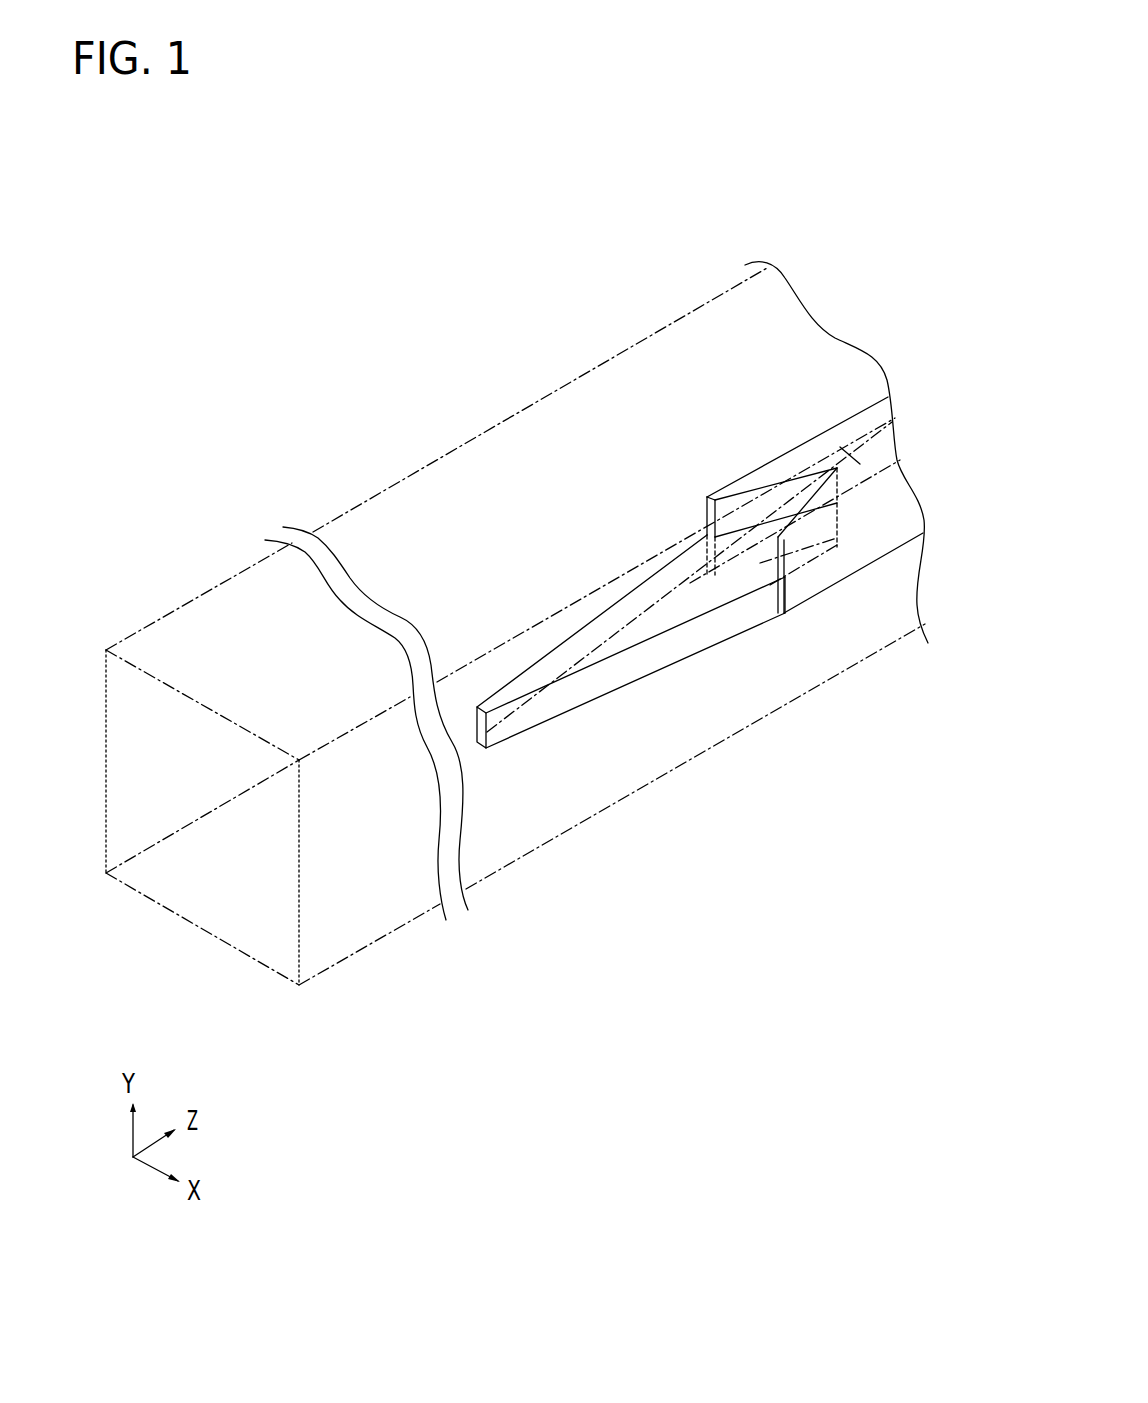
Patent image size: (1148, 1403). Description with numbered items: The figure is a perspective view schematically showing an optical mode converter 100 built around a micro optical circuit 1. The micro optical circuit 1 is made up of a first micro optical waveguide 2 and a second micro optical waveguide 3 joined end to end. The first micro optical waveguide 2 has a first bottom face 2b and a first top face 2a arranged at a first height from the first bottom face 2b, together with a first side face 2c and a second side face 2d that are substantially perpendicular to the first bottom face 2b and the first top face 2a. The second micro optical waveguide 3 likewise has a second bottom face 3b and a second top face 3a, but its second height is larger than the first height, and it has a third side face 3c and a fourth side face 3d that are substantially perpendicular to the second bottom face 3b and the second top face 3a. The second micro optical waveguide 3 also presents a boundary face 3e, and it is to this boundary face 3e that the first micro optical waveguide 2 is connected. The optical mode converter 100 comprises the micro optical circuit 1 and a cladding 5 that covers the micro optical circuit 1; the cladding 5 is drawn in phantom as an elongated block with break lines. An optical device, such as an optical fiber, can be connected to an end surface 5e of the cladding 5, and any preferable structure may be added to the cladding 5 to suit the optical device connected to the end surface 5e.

The optical mode converter 100 is at (712, 277).
The micro optical circuit 1 is at (795, 794).
The first micro optical waveguide 2 is at (640, 682).
The first top face 2a is at (668, 613).
The first bottom face 2b is at (562, 738).
The first side face 2c is at (612, 680).
The second side face 2d is at (570, 658).
The second micro optical waveguide 3 is at (810, 585).
The second top face 3a is at (808, 463).
The second bottom face 3b is at (830, 560).
The third side face 3c is at (877, 523).
The fourth side face 3d is at (842, 452).
The boundary face 3e is at (755, 510).
The cladding 5 is at (551, 386).
The end surface 5e is at (202, 863).